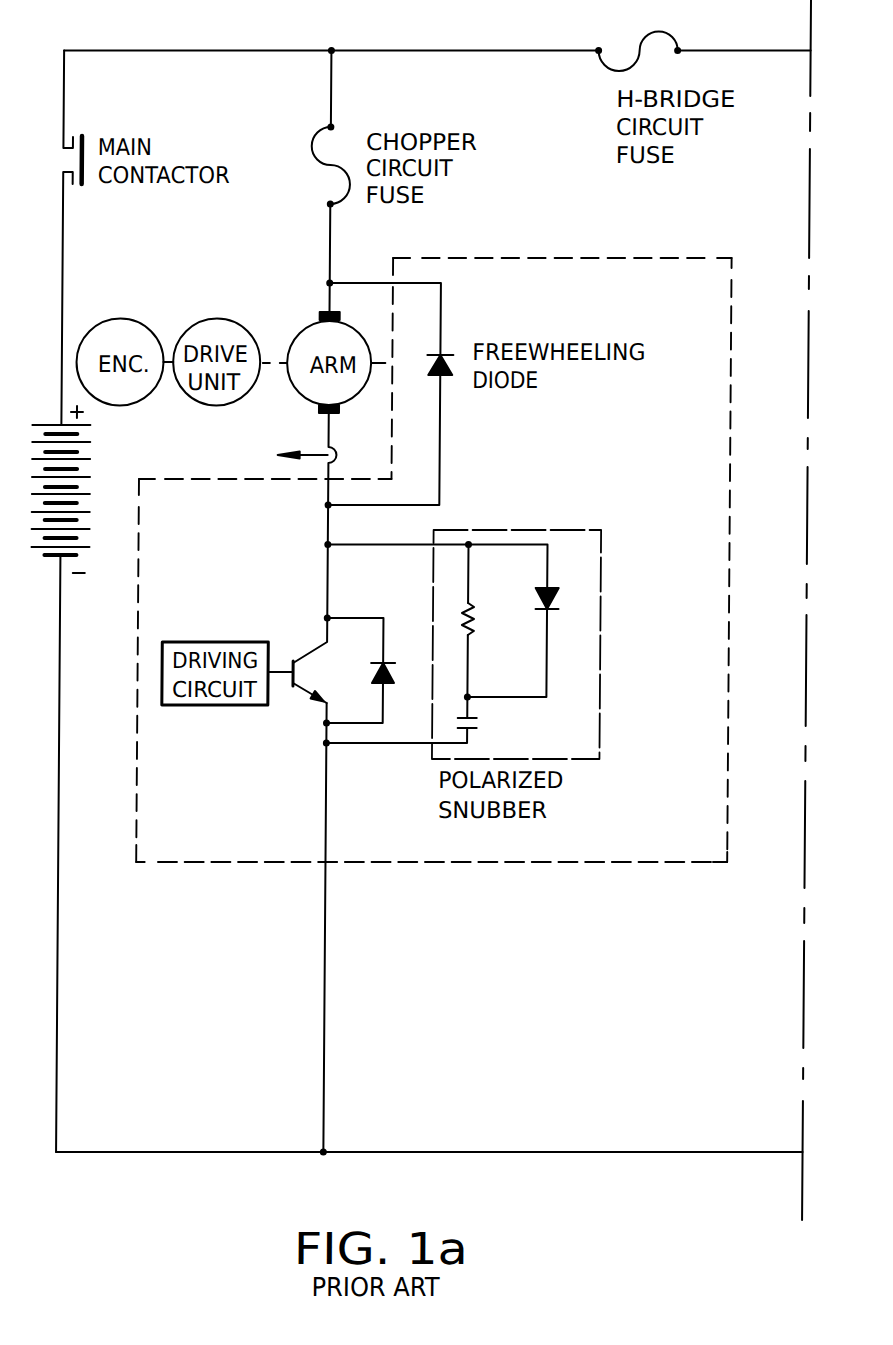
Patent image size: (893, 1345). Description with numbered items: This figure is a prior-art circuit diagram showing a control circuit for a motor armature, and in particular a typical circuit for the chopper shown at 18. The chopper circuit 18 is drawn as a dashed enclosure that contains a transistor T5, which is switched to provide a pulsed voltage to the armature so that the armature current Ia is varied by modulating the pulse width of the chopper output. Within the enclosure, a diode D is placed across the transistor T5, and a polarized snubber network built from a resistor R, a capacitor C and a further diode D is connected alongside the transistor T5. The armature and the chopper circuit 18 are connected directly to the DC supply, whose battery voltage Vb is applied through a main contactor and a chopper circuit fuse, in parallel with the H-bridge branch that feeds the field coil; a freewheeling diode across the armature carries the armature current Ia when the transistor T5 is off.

The chopper circuit 18 is at (550, 255).
The chopper transistor T5 is at (310, 624).
The diode D is at (456, 655).
The snubber resistor R is at (480, 619).
The snubber capacitor C is at (483, 720).
The battery Vb is at (76, 489).
The armature current Ia is at (303, 440).